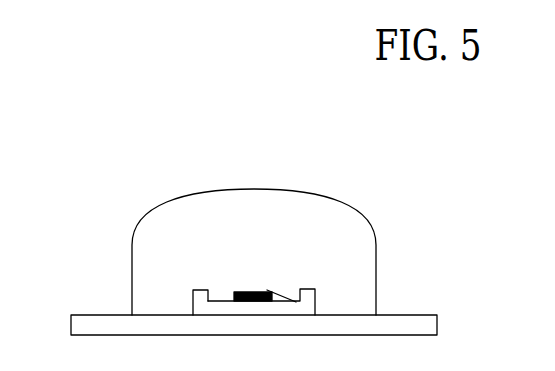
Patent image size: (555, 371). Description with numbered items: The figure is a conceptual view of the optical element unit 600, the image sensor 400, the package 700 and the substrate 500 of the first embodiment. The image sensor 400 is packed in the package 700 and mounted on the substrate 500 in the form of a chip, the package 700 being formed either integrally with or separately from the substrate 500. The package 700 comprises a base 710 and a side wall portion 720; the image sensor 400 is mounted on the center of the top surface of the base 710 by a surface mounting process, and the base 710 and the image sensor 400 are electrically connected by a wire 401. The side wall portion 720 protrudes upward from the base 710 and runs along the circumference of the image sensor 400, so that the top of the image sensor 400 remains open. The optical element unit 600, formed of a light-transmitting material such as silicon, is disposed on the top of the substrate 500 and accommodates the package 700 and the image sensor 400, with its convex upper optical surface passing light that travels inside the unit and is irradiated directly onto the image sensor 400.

The image sensor 400 is at (244, 291).
The wire 401 is at (271, 286).
The substrate 500 is at (400, 323).
The optical element unit 600 is at (322, 255).
The package 700 is at (72, 213).
The base 710 is at (193, 298).
The side wall portion 720 is at (218, 307).